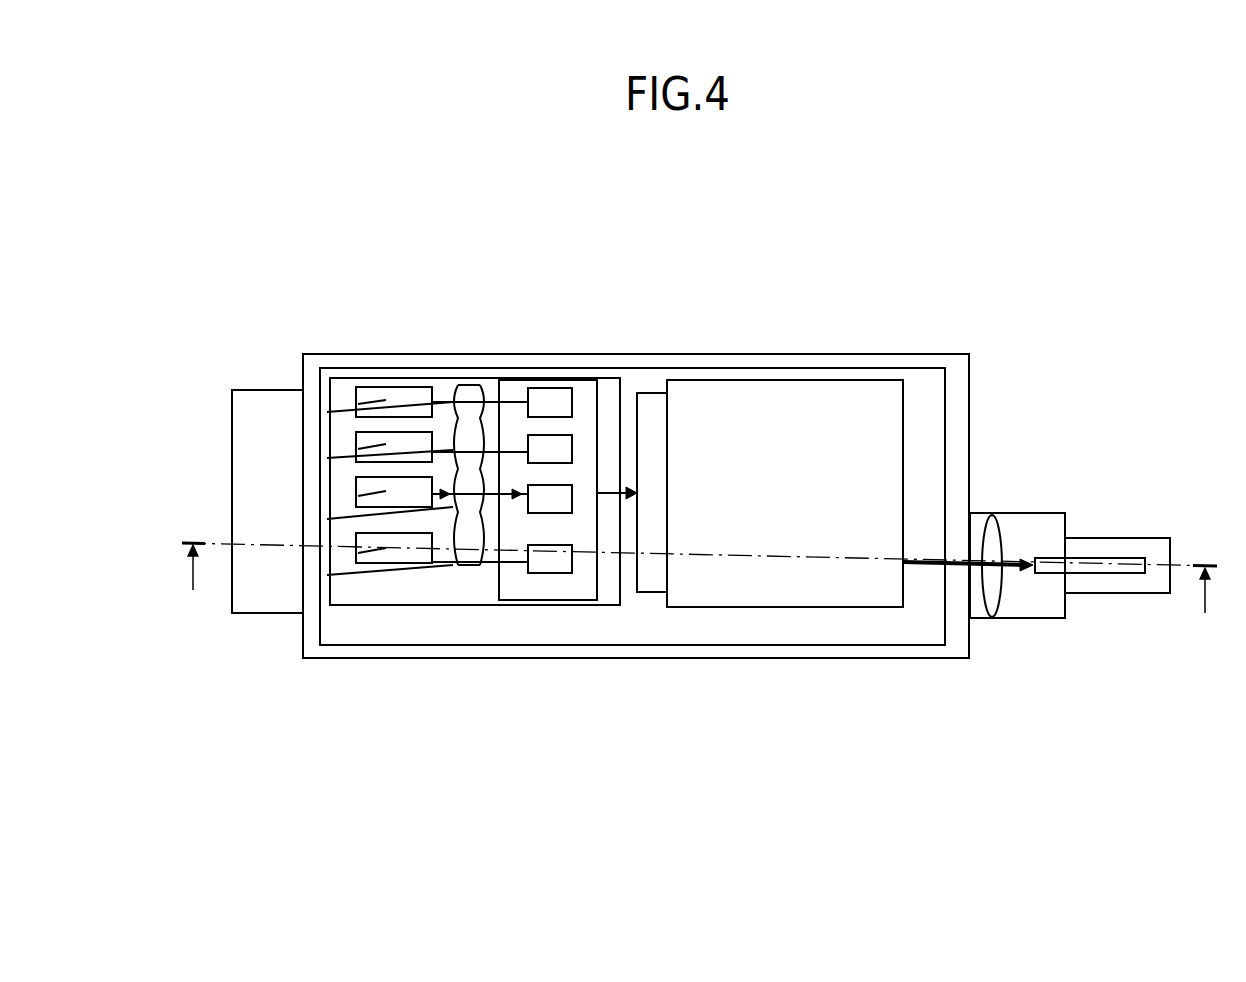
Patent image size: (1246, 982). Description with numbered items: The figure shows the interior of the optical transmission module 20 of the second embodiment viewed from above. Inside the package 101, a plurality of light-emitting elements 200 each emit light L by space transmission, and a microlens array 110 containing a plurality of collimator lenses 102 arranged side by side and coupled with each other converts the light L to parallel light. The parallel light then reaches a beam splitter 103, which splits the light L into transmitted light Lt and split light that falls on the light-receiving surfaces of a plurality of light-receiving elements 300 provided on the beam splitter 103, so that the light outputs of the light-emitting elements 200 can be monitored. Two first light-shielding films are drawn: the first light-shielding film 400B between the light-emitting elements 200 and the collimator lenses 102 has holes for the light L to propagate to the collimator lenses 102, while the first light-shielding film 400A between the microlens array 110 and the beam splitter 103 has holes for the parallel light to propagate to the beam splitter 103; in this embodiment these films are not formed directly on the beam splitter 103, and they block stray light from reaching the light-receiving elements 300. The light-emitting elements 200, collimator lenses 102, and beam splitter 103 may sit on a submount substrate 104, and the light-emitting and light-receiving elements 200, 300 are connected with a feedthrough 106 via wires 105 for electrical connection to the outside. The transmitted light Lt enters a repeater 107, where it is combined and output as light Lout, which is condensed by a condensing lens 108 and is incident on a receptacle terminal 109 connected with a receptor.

The optical transmission module 20 is at (1063, 268).
The package 101 is at (967, 354).
The collimator lens 102 is at (497, 555).
The beam splitter 103 is at (553, 605).
The submount substrate 104 is at (630, 598).
The wire 105 is at (348, 570).
The feedthrough 106 is at (232, 507).
The repeater 107 is at (903, 585).
The condensing lens 108 is at (1002, 593).
The receptacle terminal 109 is at (1127, 557).
The microlens array 110 is at (472, 388).
The light-emitting element 200 is at (368, 389).
The light-receiving element 300 is at (572, 440).
The first light-shielding film 400A is at (489, 422).
The first light-shielding film 400B is at (450, 418).
The light L is at (440, 500).
The transmitted light Lt is at (615, 500).
The light Lout is at (927, 560).